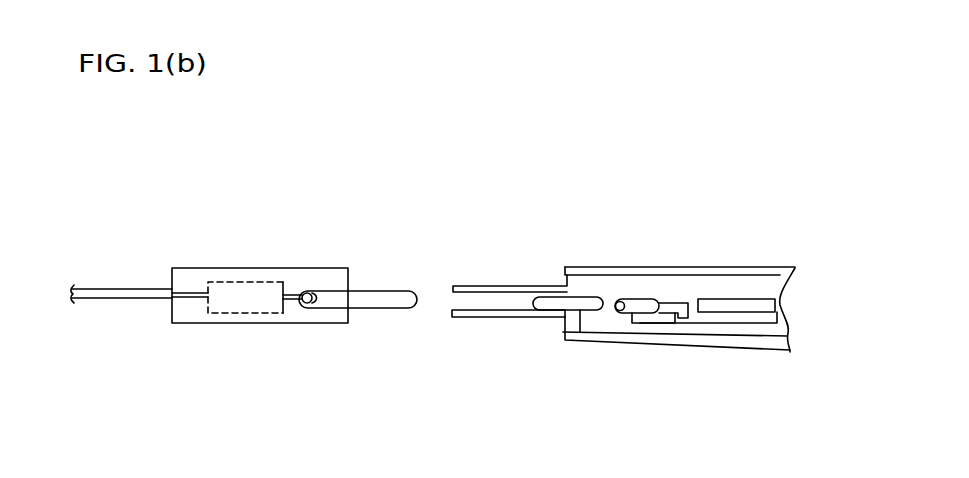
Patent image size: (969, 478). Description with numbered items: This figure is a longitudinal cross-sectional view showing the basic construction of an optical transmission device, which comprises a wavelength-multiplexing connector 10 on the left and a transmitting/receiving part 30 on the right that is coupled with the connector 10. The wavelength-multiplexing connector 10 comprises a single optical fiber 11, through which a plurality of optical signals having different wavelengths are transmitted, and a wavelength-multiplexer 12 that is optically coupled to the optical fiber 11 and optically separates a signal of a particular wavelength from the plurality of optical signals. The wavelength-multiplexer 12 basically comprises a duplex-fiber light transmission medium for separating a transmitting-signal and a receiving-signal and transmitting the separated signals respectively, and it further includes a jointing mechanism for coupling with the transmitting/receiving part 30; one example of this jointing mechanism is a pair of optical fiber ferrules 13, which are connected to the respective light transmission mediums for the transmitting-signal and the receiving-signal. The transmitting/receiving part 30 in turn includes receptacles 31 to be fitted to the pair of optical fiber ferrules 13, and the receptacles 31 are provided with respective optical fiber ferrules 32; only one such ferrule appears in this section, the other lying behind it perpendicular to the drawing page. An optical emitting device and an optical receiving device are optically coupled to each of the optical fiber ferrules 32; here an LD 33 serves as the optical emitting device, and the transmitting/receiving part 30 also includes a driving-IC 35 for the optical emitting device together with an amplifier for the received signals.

The wavelength-multiplexing connector 10 is at (328, 253).
The optical fiber 11 is at (111, 287).
The wavelength-multiplexer 12 is at (242, 281).
The optical fiber ferrule 13 is at (383, 310).
The transmitting/receiving part 30 is at (633, 255).
The receptacle 31 is at (483, 318).
The optical fiber ferrule 32 is at (578, 313).
The LD 33 is at (643, 307).
The driving-IC 35 is at (727, 300).